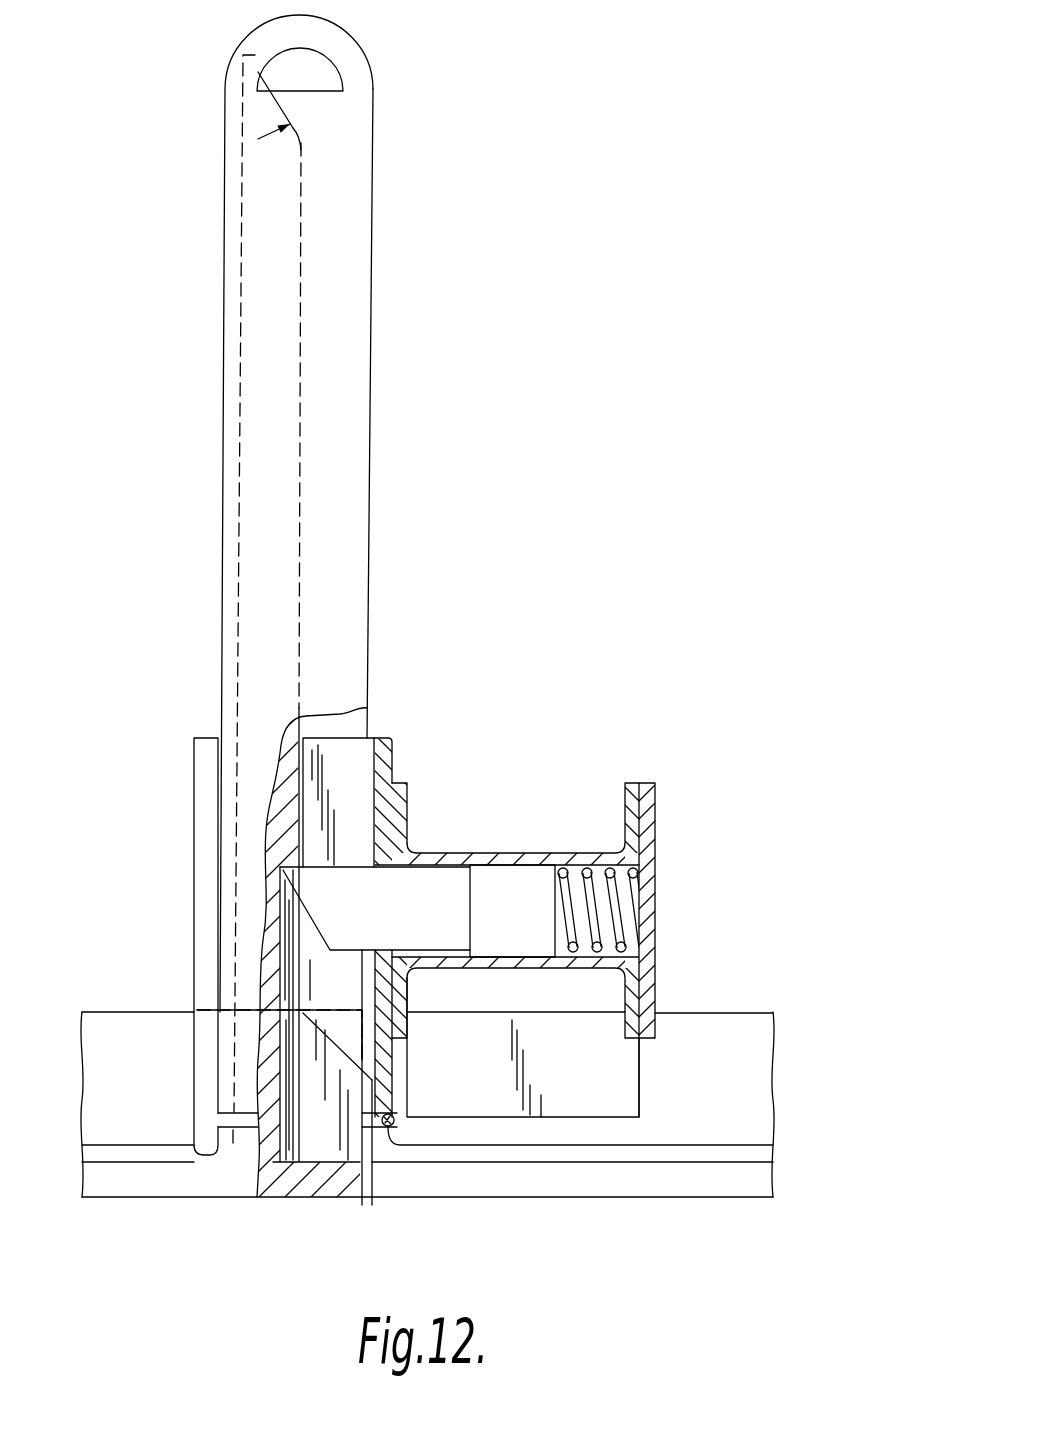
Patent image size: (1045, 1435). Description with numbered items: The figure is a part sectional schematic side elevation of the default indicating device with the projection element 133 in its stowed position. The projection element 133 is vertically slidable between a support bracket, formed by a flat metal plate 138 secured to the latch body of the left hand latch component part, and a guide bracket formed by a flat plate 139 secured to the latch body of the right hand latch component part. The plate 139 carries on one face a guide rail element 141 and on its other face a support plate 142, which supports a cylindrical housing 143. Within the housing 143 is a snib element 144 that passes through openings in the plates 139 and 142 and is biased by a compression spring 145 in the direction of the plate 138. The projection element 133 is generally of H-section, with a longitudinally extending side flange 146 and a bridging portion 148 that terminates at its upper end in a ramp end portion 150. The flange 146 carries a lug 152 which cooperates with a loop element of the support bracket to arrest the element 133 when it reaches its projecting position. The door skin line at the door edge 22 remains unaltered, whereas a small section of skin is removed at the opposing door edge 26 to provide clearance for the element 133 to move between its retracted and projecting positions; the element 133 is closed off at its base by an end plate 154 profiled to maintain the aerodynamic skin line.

The projection element 133 is at (380, 458).
The side flange 146 is at (357, 128).
The lug 152 is at (320, 71).
The bridging portion 148 is at (258, 432).
The ramp end portion 150 is at (223, 137).
The flat metal plate 138 is at (207, 805).
The guide rail element 141 is at (342, 758).
The flat plate 139 is at (388, 753).
The support plate 142 is at (403, 793).
The cylindrical housing 143 is at (558, 857).
The snib element 144 is at (485, 890).
The compression spring 145 is at (617, 902).
The end plate 154 is at (205, 1183).
The door edge 26 is at (359, 1206).
The door edge 22 is at (374, 1206).